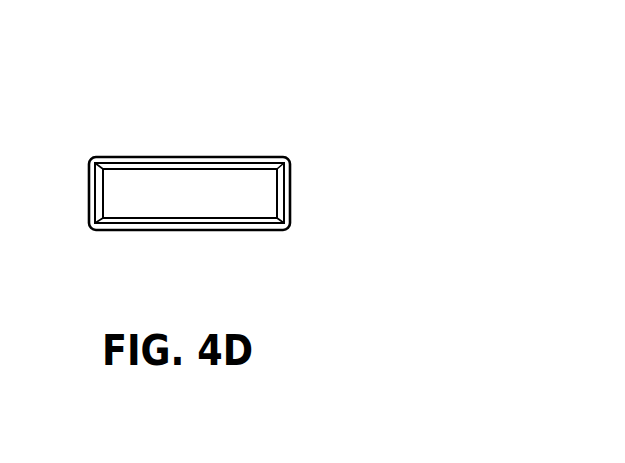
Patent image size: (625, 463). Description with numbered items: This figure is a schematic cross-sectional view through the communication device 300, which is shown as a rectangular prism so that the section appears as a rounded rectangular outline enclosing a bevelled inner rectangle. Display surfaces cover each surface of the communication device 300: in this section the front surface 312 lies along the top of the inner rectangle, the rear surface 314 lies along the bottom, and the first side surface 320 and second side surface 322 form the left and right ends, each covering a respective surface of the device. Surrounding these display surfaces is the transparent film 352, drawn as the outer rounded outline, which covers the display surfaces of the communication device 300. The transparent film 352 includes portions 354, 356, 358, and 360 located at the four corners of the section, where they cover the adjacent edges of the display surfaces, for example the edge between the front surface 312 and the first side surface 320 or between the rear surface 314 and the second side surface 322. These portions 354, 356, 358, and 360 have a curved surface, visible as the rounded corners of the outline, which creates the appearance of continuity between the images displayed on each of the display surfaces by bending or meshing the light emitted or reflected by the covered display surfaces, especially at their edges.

The communication device 300 is at (353, 95).
The front surface 312 is at (220, 164).
The rear surface 314 is at (244, 221).
The first side surface 320 is at (99, 206).
The second side surface 322 is at (280, 193).
The transparent film 352 is at (148, 158).
The portion 354 is at (91, 157).
The portion 356 is at (288, 158).
The portion 358 is at (92, 231).
The portion 360 is at (288, 228).